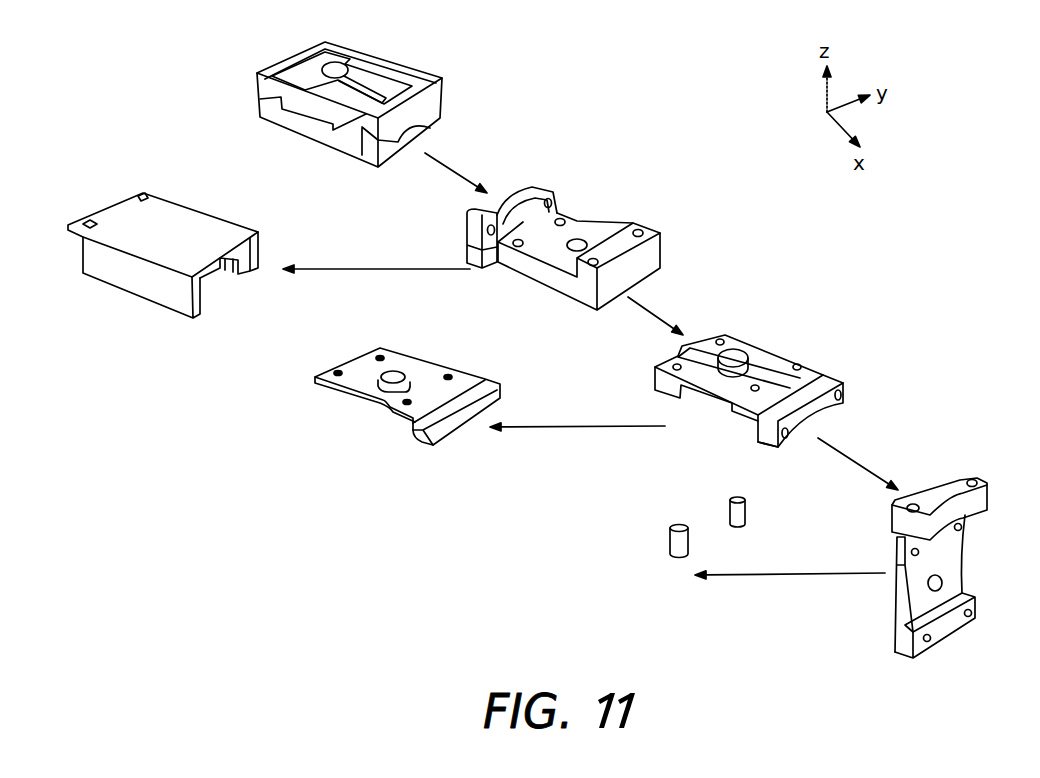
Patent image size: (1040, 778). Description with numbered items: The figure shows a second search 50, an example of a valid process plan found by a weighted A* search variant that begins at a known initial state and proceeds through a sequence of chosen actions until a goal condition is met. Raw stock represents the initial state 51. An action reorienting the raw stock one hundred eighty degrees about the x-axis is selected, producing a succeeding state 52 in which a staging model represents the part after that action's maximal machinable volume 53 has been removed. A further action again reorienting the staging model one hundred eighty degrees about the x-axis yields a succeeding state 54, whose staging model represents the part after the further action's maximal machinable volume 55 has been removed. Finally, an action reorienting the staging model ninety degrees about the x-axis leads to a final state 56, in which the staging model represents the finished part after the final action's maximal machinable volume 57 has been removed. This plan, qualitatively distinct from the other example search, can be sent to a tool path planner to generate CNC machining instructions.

The second search 50 is at (188, 72).
The initial state 51 is at (443, 107).
The succeeding state 52 is at (660, 250).
The maximal machinable volume 53 is at (82, 252).
The succeeding state 54 is at (847, 393).
The maximal machinable volume 55 is at (315, 380).
The final state 56 is at (965, 552).
The maximal machinable volume 57 is at (670, 540).